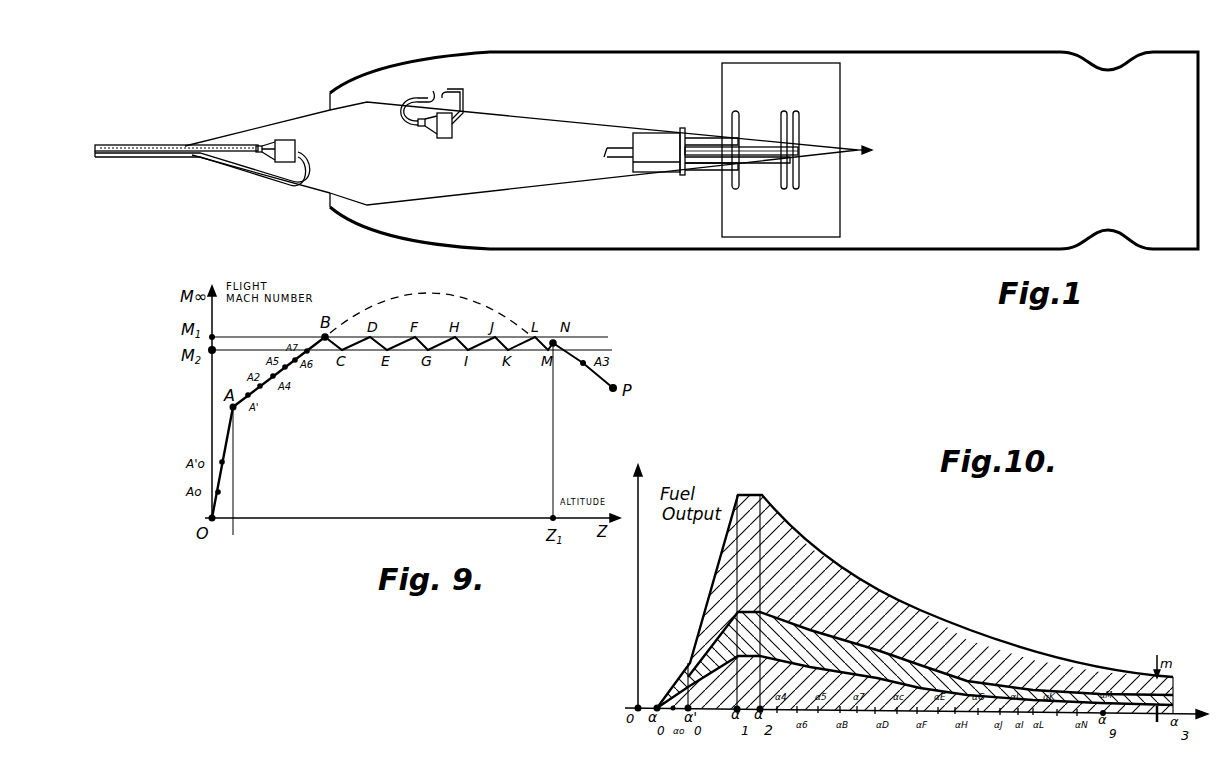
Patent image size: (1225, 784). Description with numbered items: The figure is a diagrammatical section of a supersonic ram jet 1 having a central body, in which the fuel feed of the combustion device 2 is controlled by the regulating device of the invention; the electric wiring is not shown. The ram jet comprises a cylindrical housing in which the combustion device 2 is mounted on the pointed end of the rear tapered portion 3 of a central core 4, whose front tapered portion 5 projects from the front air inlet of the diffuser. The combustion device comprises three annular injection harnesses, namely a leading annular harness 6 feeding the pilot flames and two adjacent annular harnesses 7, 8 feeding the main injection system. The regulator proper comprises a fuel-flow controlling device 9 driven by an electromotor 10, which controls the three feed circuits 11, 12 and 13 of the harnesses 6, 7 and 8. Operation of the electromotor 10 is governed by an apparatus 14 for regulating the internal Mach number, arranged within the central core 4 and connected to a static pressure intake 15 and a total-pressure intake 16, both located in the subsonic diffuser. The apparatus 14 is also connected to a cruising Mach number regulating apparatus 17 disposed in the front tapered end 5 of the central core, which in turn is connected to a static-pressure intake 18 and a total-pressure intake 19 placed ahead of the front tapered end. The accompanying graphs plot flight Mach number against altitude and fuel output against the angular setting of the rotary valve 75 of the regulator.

In FIG. 1, the engine nacelle 1 is at (623, 52).
In FIG. 1, the combustion device 2 is at (812, 71).
In FIG. 1, the rear tapered portion 3 is at (836, 151).
In FIG. 1, the central core 4 is at (587, 181).
In FIG. 1, the front tapered portion 5 is at (299, 182).
In FIG. 1, the leading annular harness 6 is at (737, 121).
In FIG. 10, the leading annular harness 6 is at (1010, 700).
In FIG. 1, the annular harness 7 is at (782, 192).
In FIG. 10, the annular harness 7 is at (925, 688).
In FIG. 1, the annular harness 8 is at (797, 126).
In FIG. 10, the annular harness 8 is at (893, 650).
In FIG. 1, the fuel-flow controlling device 9 is at (648, 140).
In FIG. 1, the electromotor 10 is at (651, 167).
In FIG. 1, the feed circuit 11 is at (690, 140).
In FIG. 1, the feed circuit 12 is at (697, 165).
In FIG. 1, the feed circuit 13 is at (762, 156).
In FIG. 1, the apparatus for regulating the internal Mach number 14 is at (439, 136).
In FIG. 1, the static pressure intake 15 is at (430, 102).
In FIG. 1, the total-pressure intake 16 is at (442, 91).
In FIG. 1, the cruising Mach number regulating apparatus 17 is at (297, 143).
In FIG. 1, the static-pressure intake 18 is at (224, 143).
In FIG. 1, the total-pressure intake 19 is at (136, 156).
In FIG. 10, the rotary valve 75 is at (916, 733).